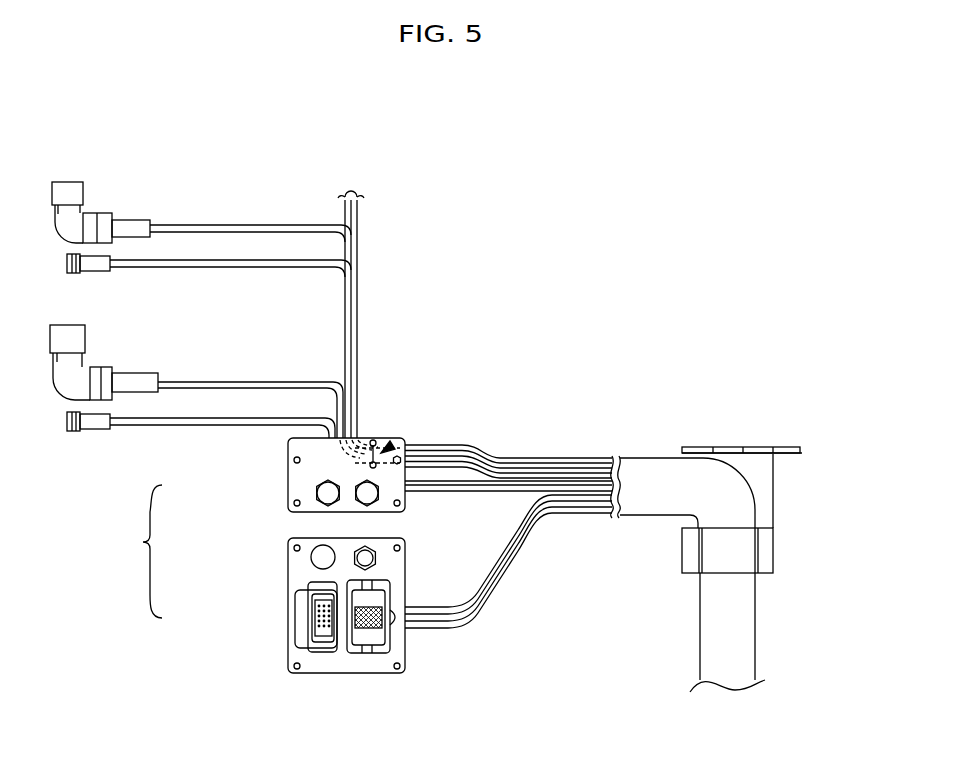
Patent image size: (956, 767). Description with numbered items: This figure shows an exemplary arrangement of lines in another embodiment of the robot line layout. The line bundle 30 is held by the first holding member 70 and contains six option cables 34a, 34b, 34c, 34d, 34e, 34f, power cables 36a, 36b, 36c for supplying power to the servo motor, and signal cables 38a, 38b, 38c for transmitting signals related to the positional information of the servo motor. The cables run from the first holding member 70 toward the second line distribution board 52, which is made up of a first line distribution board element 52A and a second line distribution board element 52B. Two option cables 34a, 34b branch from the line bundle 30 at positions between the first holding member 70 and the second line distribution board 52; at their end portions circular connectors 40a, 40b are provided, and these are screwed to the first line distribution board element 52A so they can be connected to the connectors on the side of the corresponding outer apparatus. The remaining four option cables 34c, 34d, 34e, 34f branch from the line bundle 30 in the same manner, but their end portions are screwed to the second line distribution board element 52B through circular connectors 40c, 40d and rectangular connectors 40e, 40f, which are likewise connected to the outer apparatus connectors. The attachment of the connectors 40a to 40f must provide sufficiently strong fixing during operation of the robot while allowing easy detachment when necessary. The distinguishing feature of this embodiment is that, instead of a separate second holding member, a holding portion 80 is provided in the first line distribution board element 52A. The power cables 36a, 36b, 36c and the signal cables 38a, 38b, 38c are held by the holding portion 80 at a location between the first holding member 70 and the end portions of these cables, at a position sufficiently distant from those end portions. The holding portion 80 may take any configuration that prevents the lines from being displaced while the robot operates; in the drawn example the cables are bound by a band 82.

The line bundle 30 is at (757, 607).
The option cable 34a is at (428, 492).
The option cable 34b is at (470, 492).
The option cable 34c is at (513, 530).
The option cable 34d is at (508, 548).
The option cable 34e is at (500, 580).
The option cable 34f is at (482, 613).
The power cable 36a is at (198, 225).
The power cable 36b is at (247, 380).
The power cable 36c is at (366, 203).
The signal cable 38a is at (210, 268).
The signal cable 38b is at (168, 427).
The signal cable 38c is at (344, 200).
The circular connector 40a is at (316, 484).
The circular connector 40b is at (360, 483).
The circular connector 40c is at (312, 562).
The circular connector 40d is at (355, 552).
The rectangular connector 40e is at (320, 647).
The rectangular connector 40f is at (367, 647).
The second line distribution board 52 is at (136, 551).
The first line distribution board element 52A is at (288, 498).
The second line distribution board element 52B is at (288, 608).
The first holding member 70 is at (737, 447).
The holding portion 80 is at (387, 447).
The band 82 is at (370, 440).